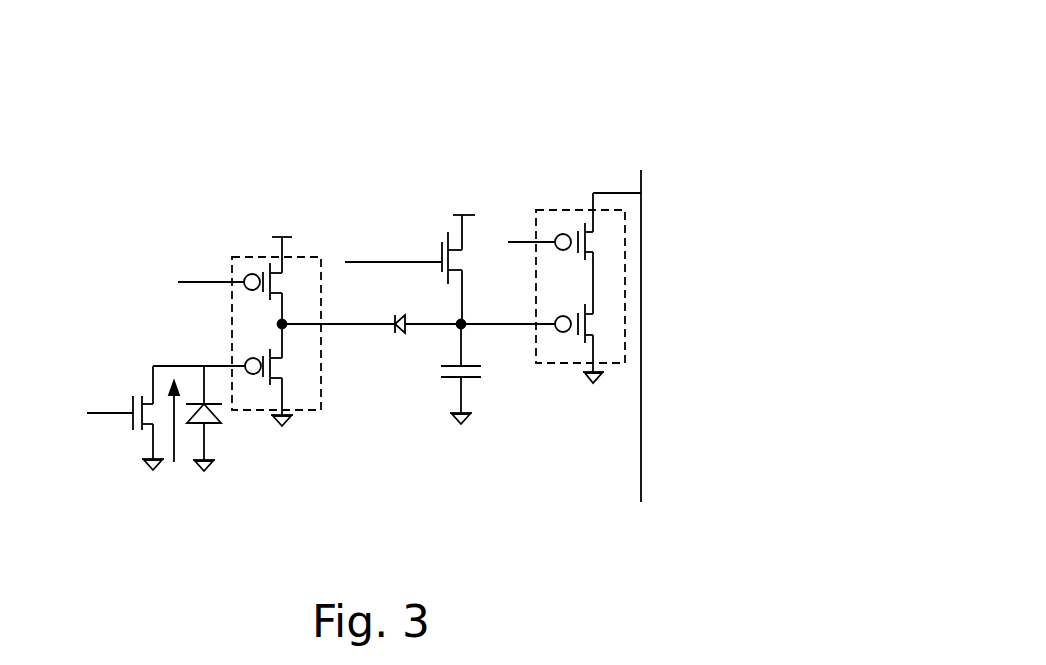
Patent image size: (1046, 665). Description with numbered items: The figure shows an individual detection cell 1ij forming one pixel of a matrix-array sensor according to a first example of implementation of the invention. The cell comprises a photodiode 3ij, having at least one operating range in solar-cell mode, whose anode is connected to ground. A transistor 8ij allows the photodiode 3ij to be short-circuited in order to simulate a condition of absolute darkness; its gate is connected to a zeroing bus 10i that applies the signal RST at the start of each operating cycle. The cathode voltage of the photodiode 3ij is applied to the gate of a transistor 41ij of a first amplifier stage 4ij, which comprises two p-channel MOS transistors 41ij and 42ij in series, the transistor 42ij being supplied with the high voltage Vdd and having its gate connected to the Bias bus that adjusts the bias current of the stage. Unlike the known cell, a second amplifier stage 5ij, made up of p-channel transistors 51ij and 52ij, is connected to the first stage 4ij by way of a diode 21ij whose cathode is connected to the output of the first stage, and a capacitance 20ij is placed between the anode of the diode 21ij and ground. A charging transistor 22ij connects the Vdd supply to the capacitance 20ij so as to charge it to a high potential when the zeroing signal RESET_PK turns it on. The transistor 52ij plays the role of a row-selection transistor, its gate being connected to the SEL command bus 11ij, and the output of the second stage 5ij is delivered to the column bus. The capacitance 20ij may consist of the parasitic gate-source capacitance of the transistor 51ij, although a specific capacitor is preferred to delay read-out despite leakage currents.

The individual detection cell 1ij is at (518, 112).
The photodiode 3ij is at (213, 427).
The first amplifier stage 4ij is at (229, 348).
The second amplifier stage 5ij is at (630, 315).
The transistor 8ij is at (137, 435).
The zeroing bus 10i is at (98, 422).
The SEL command bus 11ij is at (545, 231).
The capacitance 20ij is at (477, 387).
The diode 21ij is at (401, 340).
The charging transistor 22ij is at (439, 243).
The p-channel MOS field-effect transistor 41ij is at (281, 364).
The p-channel MOS field-effect transistor 42ij is at (261, 255).
The first field-effect transistor 51ij is at (601, 327).
The second field-effect transistor 52ij is at (603, 238).